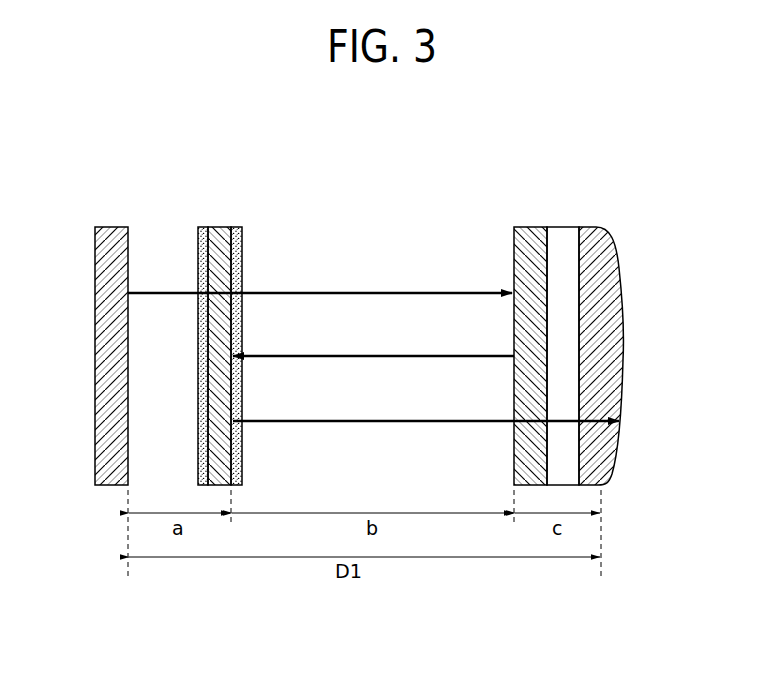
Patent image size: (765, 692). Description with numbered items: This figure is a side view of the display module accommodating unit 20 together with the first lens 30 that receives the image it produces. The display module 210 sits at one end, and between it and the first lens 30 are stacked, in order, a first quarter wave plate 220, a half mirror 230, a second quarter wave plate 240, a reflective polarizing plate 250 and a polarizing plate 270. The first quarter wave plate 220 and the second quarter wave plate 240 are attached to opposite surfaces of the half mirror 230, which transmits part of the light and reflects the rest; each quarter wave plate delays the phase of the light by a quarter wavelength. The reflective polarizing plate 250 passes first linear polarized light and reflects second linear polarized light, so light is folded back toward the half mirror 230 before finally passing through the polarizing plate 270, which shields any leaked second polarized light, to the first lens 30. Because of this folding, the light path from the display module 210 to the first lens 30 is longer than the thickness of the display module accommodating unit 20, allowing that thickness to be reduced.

The display module accommodating unit 20 is at (98, 130).
The display module 210 is at (112, 242).
The first quarter wave plate 220 is at (203, 243).
The half mirror 230 is at (218, 243).
The second quarter wave plate 240 is at (237, 241).
The reflective polarizing plate 250 is at (530, 242).
The polarizing plate 270 is at (560, 243).
The first lens 30 is at (588, 243).